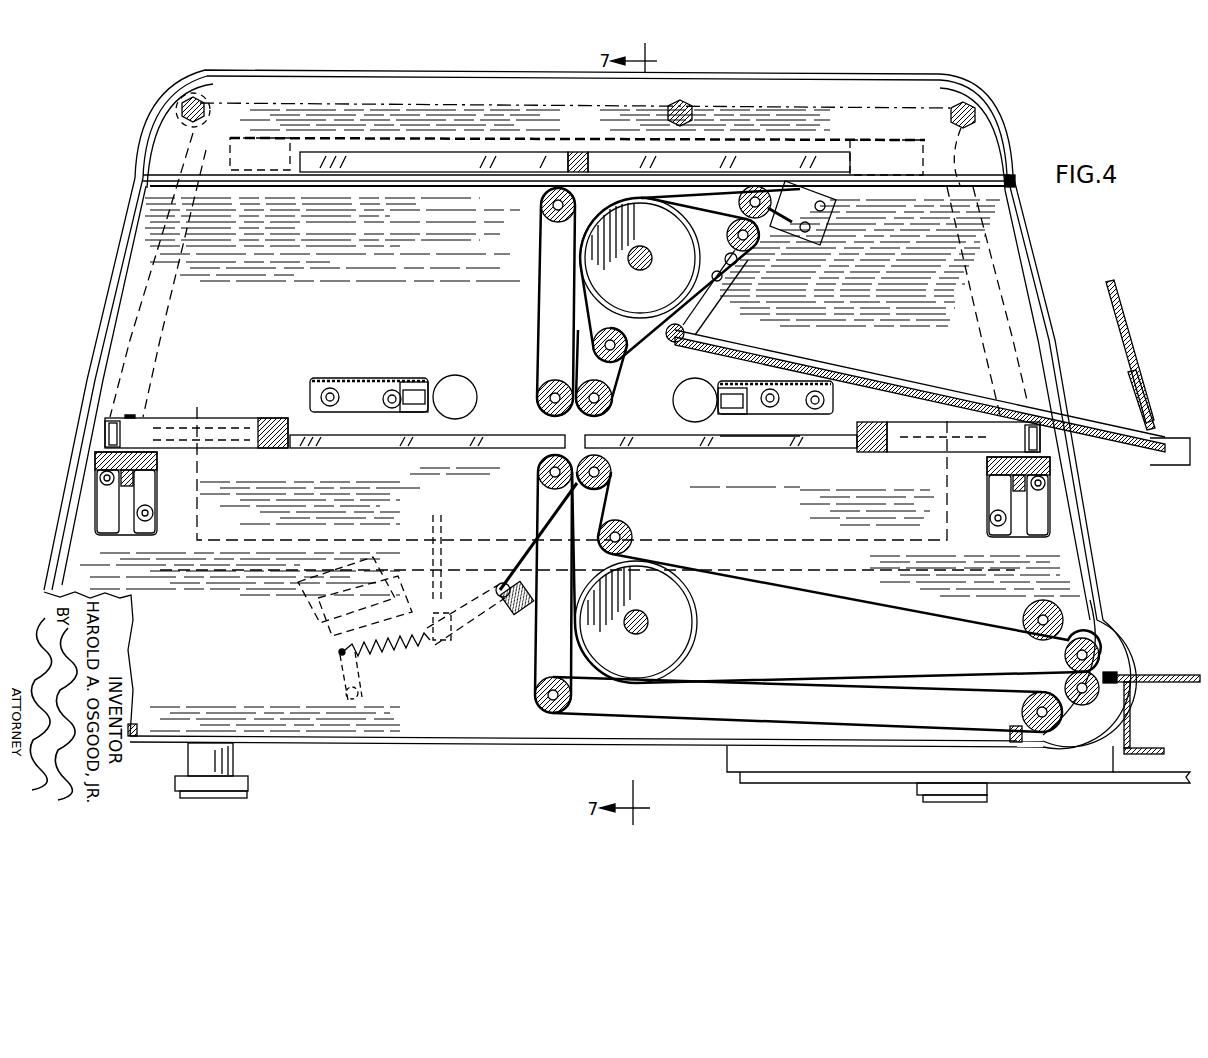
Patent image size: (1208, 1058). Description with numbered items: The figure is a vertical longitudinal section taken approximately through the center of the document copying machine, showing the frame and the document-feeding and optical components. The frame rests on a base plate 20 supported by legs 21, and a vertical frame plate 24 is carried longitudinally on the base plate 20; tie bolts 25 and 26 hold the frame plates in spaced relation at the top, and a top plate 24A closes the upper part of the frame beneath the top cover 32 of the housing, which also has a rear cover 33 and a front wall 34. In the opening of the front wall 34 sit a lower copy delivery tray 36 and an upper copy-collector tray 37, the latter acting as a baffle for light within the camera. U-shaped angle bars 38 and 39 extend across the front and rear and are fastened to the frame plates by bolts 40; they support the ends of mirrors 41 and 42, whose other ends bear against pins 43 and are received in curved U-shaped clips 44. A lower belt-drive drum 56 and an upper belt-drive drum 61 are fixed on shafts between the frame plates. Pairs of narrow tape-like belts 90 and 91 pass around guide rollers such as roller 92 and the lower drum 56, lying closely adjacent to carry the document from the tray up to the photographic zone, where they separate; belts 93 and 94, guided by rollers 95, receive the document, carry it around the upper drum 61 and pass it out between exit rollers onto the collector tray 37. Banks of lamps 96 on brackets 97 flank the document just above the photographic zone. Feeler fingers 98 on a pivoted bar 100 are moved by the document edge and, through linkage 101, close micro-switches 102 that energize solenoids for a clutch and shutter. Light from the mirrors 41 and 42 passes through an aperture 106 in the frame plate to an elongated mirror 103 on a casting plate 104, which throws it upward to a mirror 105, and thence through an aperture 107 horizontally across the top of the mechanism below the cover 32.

The base plate 20 is at (505, 744).
The legs 21 is at (240, 798).
The frame plate 24 is at (128, 288).
The top plate 24A is at (310, 183).
The tie bolt 25 is at (686, 100).
The tie bolt 26 is at (976, 114).
The top cover 32 is at (437, 71).
The rear cover 33 is at (84, 388).
The front wall 34 is at (1044, 302).
The lower copy delivery tray 36 is at (1128, 677).
The upper copy-collector tray 37 is at (1068, 413).
The U-shaped angle bar 38 is at (1045, 522).
The U-shaped angle bar 39 is at (110, 505).
The bolts 40 is at (145, 516).
The mirror 41 is at (233, 418).
The mirror 42 is at (888, 422).
The pins 43 is at (128, 416).
The U-shaped clips 44 is at (106, 436).
The belt-drive drum 56 is at (697, 628).
The belt-drive drum 61 is at (618, 312).
The tape-like belts 90 is at (757, 705).
The tape-like belts 91 is at (824, 600).
The guide roller 92 is at (633, 534).
The tape-like belts 93 is at (538, 345).
The tape-like belts 94 is at (614, 385).
The guide rollers 95 is at (628, 350).
The lamps 96 is at (456, 378).
The brackets 97 is at (345, 378).
The feeler fingers 98 is at (520, 560).
The pivoted bar 100 is at (517, 602).
The linkage 101 is at (452, 642).
The micro-switches 102 is at (298, 625).
The elongated mirror 103 is at (748, 450).
The casting plate 104 is at (218, 568).
The mirror 105 is at (726, 152).
The aperture 106 is at (438, 450).
The aperture 107 is at (806, 158).